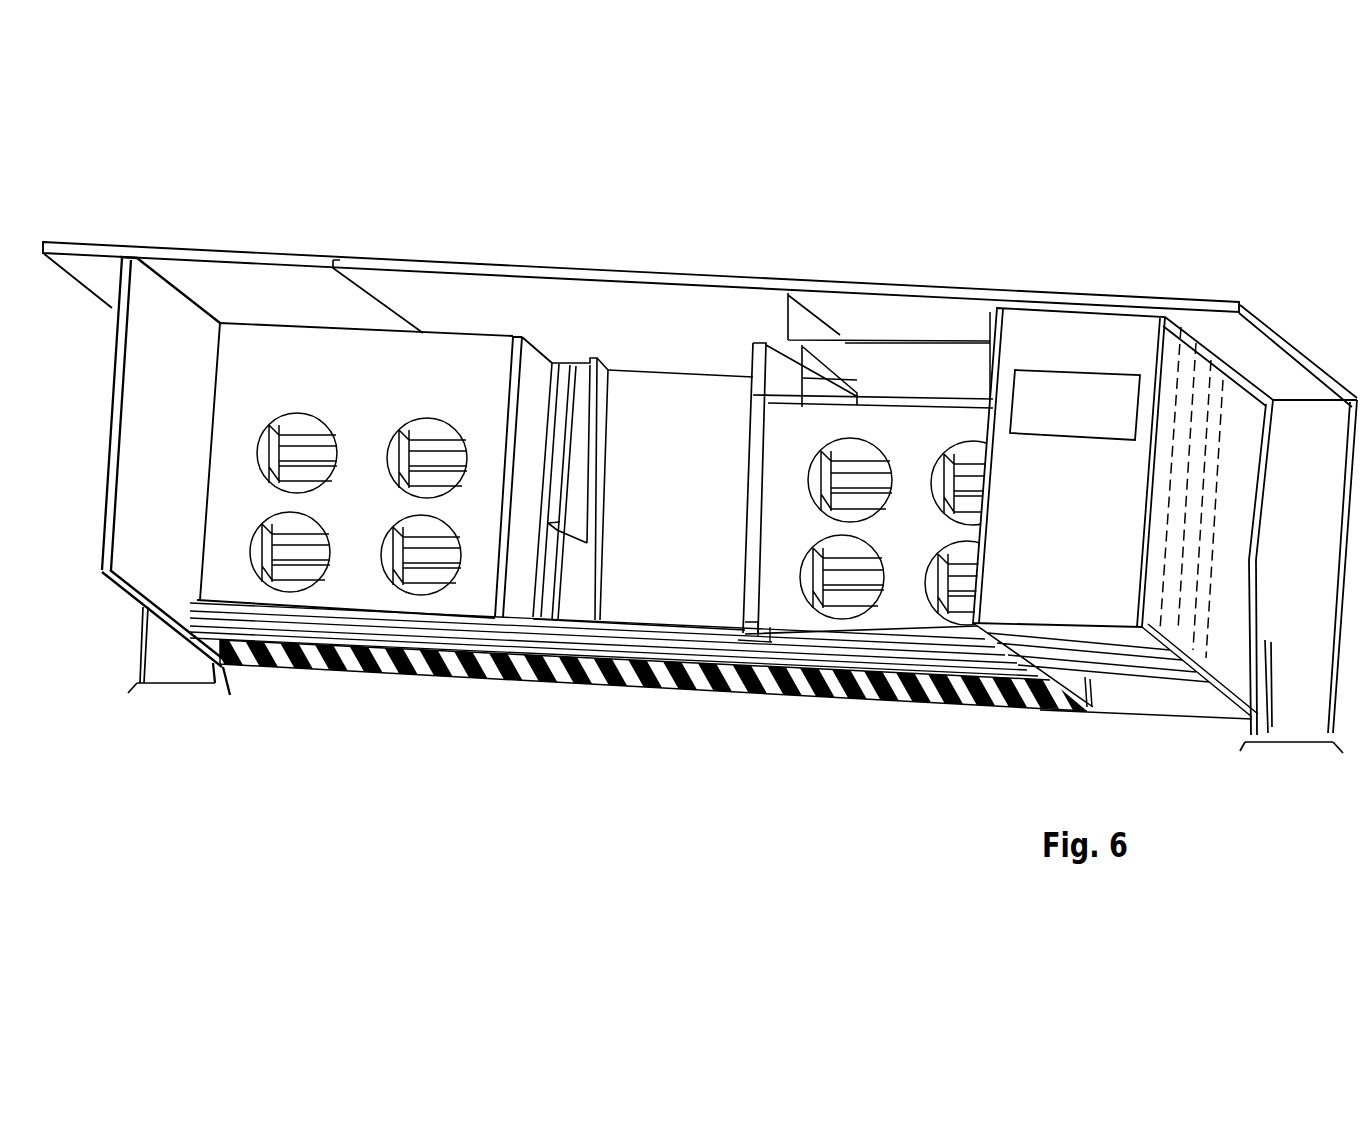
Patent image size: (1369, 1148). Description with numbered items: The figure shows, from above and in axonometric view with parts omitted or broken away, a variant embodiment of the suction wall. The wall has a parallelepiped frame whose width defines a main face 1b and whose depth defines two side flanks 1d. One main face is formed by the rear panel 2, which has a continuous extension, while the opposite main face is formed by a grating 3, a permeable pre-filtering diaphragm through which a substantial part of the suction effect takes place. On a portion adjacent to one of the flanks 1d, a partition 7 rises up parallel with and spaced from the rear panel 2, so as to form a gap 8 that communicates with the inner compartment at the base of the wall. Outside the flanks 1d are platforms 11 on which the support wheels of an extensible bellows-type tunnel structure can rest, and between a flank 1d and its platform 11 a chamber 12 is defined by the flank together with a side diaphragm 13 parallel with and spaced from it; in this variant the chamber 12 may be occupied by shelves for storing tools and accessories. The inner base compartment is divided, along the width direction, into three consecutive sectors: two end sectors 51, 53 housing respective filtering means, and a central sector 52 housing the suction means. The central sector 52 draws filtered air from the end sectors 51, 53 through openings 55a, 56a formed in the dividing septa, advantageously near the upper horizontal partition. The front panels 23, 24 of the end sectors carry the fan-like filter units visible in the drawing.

The main face 1b is at (553, 267).
The side flank 1d is at (119, 310).
The rear panel 2 is at (383, 277).
The grating 3 is at (563, 677).
The partition 7 is at (804, 385).
The gap 8 is at (900, 320).
The platform 11 is at (1300, 776).
The chamber 12 is at (1147, 697).
The side diaphragm 13 is at (1188, 465).
The front panel of first compartment 23 is at (452, 367).
The front panel of second compartment 24 is at (907, 423).
The end sector 51 is at (303, 437).
The central sector 52 is at (683, 413).
The end sector 53 is at (850, 463).
The opening 55a is at (576, 450).
The opening 56a is at (740, 567).